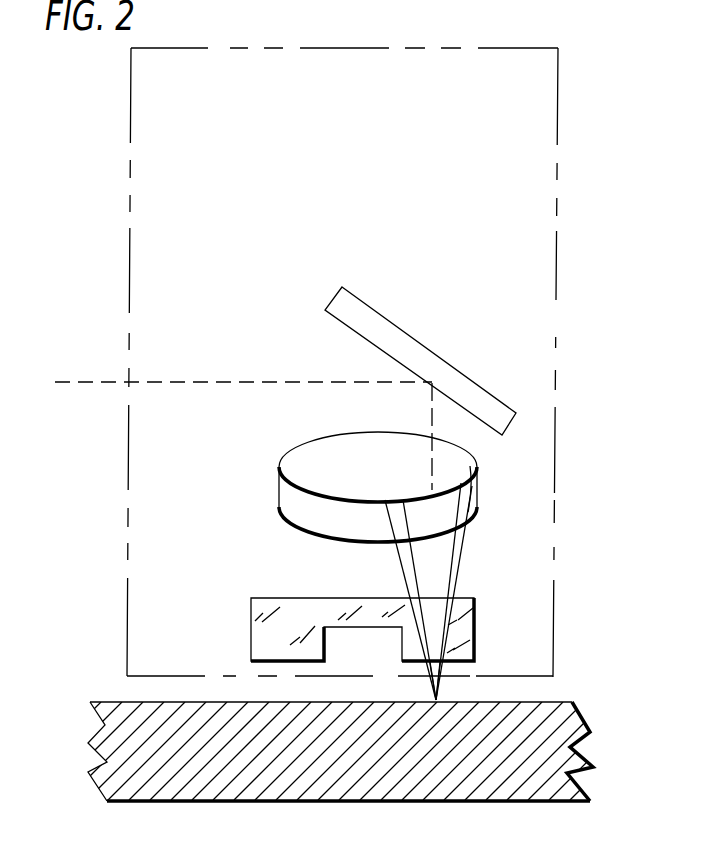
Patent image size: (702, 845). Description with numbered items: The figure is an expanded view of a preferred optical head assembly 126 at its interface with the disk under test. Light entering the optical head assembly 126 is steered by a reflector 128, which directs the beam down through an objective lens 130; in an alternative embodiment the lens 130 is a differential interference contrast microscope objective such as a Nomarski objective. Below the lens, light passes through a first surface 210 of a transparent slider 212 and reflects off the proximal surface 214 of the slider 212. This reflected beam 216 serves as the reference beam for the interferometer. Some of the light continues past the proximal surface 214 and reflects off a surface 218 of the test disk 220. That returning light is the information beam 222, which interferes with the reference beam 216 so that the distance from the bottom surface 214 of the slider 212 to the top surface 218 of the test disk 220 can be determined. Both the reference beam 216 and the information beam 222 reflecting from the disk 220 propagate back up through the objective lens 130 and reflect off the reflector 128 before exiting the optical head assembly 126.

The optical head assembly 126 is at (128, 283).
The reflector 128 is at (440, 355).
The objective lens 130 is at (289, 453).
The reflected beam 216 is at (398, 549).
The first surface 210 is at (463, 598).
The transparent slider 212 is at (479, 635).
The proximal surface 214 is at (250, 640).
The information beam 222 is at (421, 668).
The surface of the test disk 218 is at (545, 703).
The test disk 220 is at (88, 770).